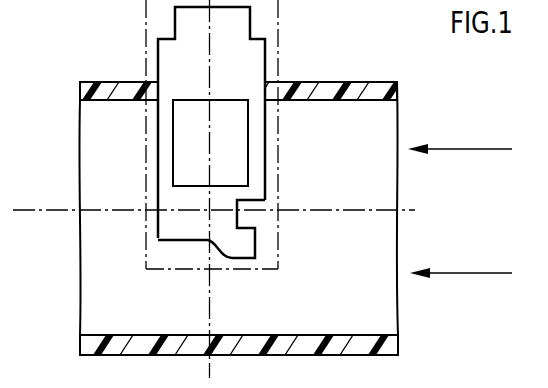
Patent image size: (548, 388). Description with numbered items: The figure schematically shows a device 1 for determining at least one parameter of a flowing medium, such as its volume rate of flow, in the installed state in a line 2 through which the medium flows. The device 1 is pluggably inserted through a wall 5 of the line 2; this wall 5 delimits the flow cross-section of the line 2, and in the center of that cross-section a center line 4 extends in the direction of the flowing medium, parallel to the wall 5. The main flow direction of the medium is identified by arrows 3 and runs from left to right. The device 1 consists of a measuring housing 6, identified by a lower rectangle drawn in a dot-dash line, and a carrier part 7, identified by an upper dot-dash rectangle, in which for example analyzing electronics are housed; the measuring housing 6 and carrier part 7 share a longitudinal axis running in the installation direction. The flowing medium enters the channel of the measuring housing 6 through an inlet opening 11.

The device 1 is at (256, 66).
The line 2 is at (103, 128).
The arrows 3 is at (480, 144).
The center line 4 is at (40, 215).
The wall 5 is at (360, 92).
The measuring housing 6 is at (150, 255).
The carrier part 7 is at (150, 172).
The inlet opening 11 is at (243, 219).